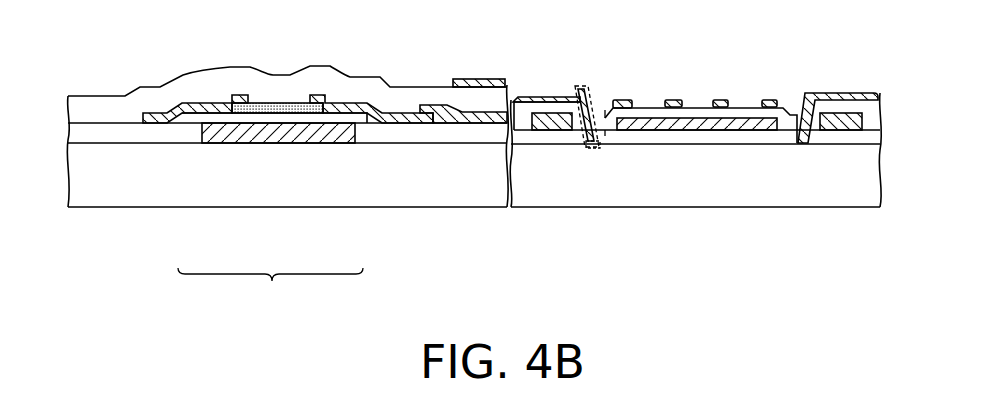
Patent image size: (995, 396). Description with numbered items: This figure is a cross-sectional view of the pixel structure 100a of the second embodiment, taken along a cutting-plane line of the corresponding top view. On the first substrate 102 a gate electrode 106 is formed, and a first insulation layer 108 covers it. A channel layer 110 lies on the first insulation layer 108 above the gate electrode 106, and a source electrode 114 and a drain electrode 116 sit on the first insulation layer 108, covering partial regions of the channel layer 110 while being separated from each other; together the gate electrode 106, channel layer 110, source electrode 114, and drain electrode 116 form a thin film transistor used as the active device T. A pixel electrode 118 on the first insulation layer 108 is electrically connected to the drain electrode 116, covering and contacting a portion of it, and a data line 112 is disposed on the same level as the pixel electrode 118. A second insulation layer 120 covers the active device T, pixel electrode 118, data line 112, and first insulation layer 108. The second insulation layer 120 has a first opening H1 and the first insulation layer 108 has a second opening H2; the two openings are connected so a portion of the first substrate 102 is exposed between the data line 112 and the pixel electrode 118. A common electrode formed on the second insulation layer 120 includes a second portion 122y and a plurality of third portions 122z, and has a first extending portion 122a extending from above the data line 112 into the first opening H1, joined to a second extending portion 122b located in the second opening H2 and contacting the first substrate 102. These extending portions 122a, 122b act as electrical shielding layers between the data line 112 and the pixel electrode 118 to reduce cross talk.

The pixel structure 100a is at (902, 285).
The first substrate 102 is at (872, 173).
The gate electrode 106 is at (308, 137).
The first insulation layer 108 is at (872, 133).
The channel layer 110 is at (263, 116).
The data line 112 is at (552, 130).
The source electrode 114 is at (217, 112).
The drain electrode 116 is at (366, 112).
The pixel electrode 118 is at (457, 118).
The second insulation layer 120 is at (872, 108).
The first extending portion 122a is at (583, 86).
The second extending portion 122b is at (592, 148).
The second portion 122y is at (548, 97).
The third portions 122z is at (472, 80).
The first opening H1 is at (599, 117).
The second opening H2 is at (599, 133).
The active device T is at (270, 293).